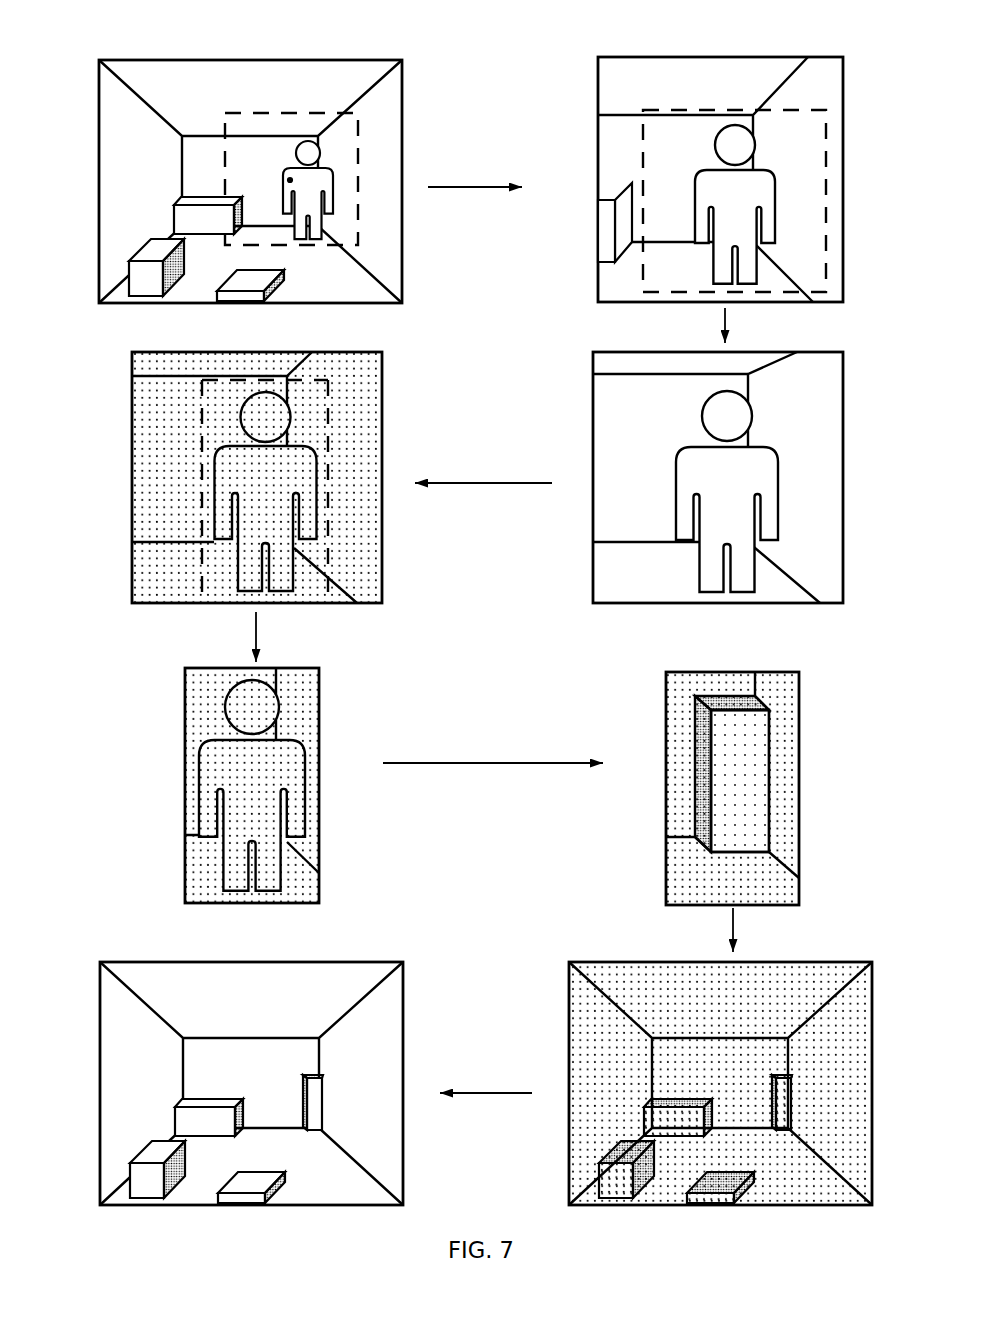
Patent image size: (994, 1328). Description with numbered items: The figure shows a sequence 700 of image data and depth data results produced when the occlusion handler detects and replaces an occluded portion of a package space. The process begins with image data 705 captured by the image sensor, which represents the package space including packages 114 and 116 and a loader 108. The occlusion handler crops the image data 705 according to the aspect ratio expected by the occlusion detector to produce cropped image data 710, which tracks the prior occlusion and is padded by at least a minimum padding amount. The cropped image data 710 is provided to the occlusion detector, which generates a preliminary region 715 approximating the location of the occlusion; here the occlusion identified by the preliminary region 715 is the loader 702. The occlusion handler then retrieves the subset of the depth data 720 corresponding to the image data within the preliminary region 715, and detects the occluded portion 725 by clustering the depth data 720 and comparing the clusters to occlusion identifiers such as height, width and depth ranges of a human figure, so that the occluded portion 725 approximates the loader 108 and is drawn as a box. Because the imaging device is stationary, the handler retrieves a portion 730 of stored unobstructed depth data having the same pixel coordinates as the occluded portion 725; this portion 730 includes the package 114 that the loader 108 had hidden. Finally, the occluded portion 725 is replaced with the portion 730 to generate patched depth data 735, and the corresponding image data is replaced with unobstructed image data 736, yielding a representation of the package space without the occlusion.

The sequence 700 is at (545, 35).
The image data 705 is at (232, 58).
The cropped image data 710 is at (362, 128).
The loader 108 is at (333, 188).
The package 114 is at (175, 218).
The package 116 is at (218, 288).
The preliminary region 715 is at (812, 107).
The loader 702 is at (777, 212).
The subset of the depth data 720 is at (285, 350).
The occluded portion 725 is at (333, 427).
The portion of the unobstructed depth data 730 is at (752, 668).
The patched depth data 735 is at (773, 960).
The unobstructed image data 736 is at (320, 960).